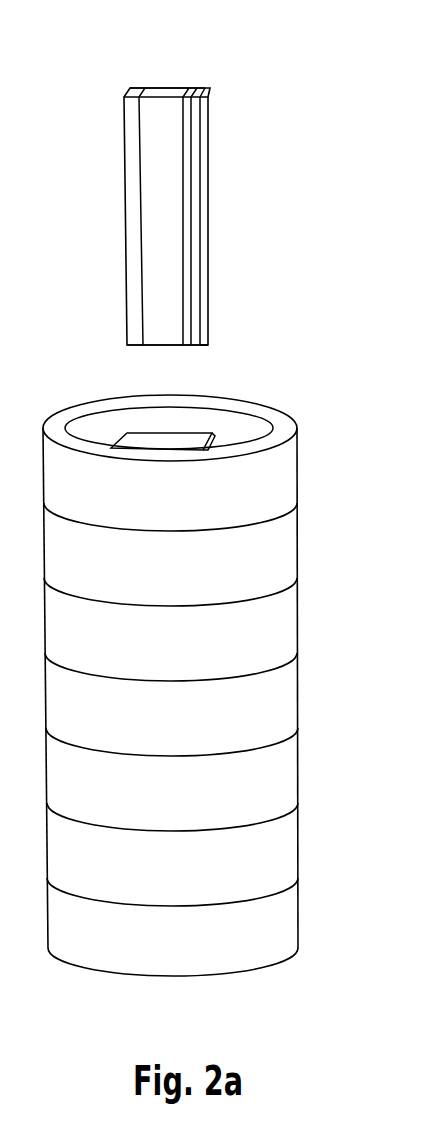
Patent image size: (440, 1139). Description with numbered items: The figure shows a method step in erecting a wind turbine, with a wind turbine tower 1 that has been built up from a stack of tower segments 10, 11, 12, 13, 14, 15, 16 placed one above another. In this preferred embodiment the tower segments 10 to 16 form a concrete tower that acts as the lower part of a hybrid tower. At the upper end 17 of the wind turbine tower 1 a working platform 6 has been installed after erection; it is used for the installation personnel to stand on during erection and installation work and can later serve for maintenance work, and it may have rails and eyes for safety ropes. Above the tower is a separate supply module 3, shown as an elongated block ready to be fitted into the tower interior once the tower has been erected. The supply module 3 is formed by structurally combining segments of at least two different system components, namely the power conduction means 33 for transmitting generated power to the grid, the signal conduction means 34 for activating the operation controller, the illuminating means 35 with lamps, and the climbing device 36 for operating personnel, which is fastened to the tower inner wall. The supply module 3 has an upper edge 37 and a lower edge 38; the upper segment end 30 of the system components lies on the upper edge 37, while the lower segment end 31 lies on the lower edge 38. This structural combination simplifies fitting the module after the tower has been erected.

The wind turbine tower 1 is at (344, 425).
The supply module 3 is at (175, 188).
The working platform 6 is at (145, 438).
The tower segment 10 is at (277, 919).
The tower segment 11 is at (277, 844).
The tower segment 12 is at (277, 771).
The tower segment 13 is at (277, 696).
The tower segment 14 is at (277, 621).
The tower segment 15 is at (277, 546).
The tower segment 16 is at (277, 479).
The upper end 17 is at (240, 432).
The upper segment end 30 is at (168, 88).
The lower segment end 31 is at (157, 347).
The power conduction means 33 is at (133, 152).
The signal conduction means 34 is at (194, 139).
The illuminating means 35 is at (193, 193).
The climbing device 36 is at (170, 257).
The upper edge 37 is at (177, 88).
The lower edge 38 is at (183, 347).